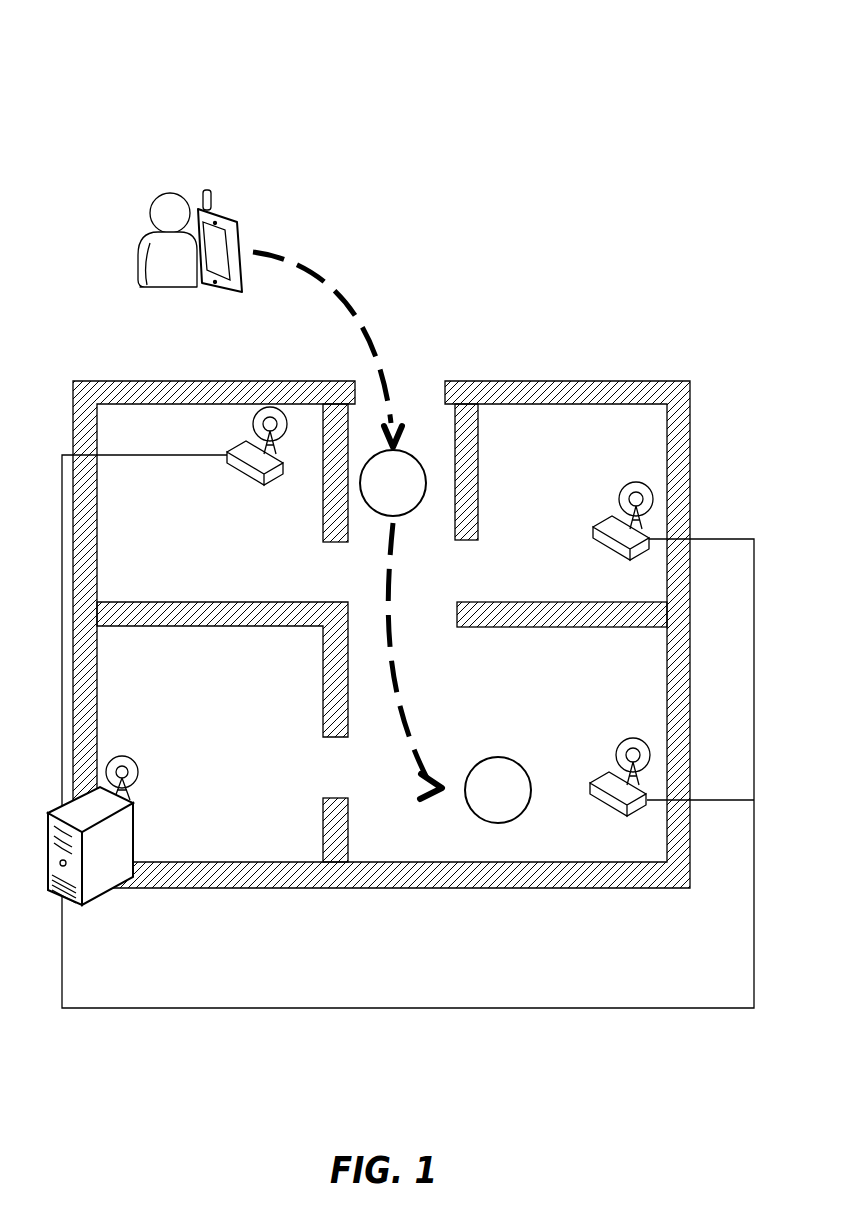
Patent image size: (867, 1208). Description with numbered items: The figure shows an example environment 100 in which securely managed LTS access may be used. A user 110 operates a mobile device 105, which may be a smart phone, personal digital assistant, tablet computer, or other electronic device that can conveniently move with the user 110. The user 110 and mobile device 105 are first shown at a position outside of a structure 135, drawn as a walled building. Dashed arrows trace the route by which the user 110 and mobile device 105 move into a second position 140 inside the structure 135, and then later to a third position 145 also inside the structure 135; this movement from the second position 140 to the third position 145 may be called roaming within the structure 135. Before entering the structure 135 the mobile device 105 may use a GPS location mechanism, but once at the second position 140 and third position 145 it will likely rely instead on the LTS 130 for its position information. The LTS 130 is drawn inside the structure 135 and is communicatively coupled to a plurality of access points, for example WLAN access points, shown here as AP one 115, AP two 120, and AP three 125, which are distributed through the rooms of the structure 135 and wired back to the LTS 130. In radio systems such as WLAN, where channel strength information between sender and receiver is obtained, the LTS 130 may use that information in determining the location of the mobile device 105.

The environment 100 is at (417, 507).
The mobile device 105 is at (266, 240).
The user 110 is at (124, 243).
The AP one 115 is at (224, 464).
The AP two 120 is at (584, 534).
The AP three 125 is at (585, 793).
The LTS 130 is at (142, 845).
The structure 135 is at (381, 662).
The second position 140 is at (435, 514).
The third position 145 is at (471, 778).